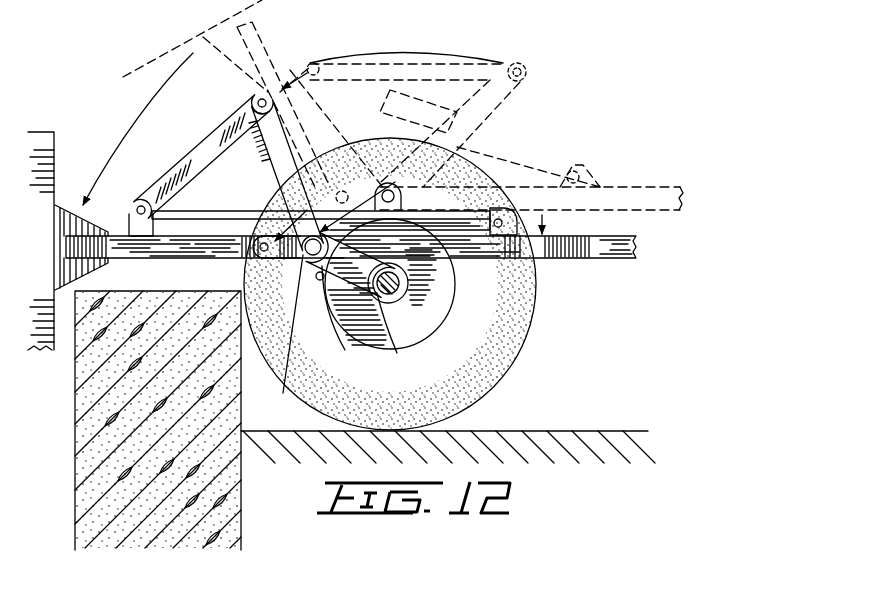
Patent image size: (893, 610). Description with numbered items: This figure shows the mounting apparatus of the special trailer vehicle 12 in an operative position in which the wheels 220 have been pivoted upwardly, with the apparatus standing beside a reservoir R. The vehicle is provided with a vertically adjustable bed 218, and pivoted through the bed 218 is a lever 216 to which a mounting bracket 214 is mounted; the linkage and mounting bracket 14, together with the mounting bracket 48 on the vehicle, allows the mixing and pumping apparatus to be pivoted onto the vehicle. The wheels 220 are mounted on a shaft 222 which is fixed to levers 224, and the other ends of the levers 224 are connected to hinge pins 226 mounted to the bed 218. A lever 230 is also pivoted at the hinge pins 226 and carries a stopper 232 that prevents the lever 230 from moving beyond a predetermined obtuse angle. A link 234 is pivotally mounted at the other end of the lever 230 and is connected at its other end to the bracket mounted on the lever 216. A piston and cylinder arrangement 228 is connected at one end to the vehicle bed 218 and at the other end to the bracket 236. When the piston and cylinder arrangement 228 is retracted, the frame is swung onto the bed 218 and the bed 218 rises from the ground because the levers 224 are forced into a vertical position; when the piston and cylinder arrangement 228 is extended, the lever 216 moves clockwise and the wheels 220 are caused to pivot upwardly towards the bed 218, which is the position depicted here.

The vehicle 12 is at (631, 263).
The linkage and mounting bracket 14 is at (472, 48).
The mounting bracket 48 is at (108, 226).
The mounting bracket 214 is at (106, 227).
The lever 216 is at (207, 254).
The vertically adjustable bed 218 is at (568, 262).
The wheels 220 is at (528, 346).
The shaft 222 is at (410, 293).
The levers 224 is at (378, 297).
The hinge pins 226 is at (448, 431).
The piston and cylinder arrangement 228 is at (482, 207).
The lever 230 is at (292, 122).
The stopper 232 is at (332, 338).
The link 234 is at (193, 160).
The bracket 236 is at (247, 203).
The reservoir R is at (77, 453).